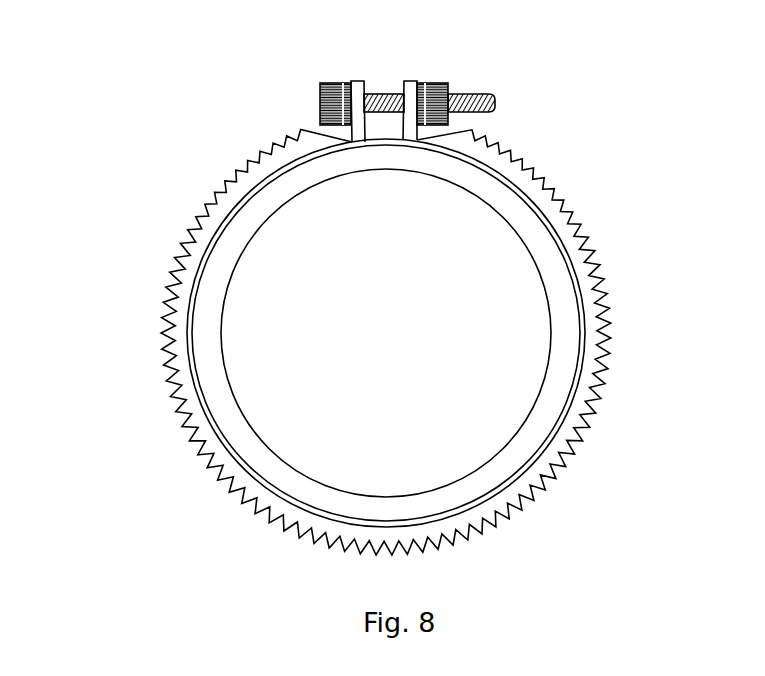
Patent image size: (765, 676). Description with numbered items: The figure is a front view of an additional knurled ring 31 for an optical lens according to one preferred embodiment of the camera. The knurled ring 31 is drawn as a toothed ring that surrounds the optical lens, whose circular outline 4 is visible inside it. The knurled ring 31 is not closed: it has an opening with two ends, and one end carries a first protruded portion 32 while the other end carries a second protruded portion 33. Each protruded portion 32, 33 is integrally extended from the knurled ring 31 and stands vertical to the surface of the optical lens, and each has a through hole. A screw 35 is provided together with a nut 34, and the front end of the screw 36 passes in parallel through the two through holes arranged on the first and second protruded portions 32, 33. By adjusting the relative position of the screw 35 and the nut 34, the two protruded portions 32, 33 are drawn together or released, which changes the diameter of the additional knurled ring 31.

The additional knurled ring 31 is at (224, 164).
The inner ring 4 is at (276, 218).
The first protruded portion 32 is at (350, 78).
The second protruded portion 33 is at (407, 77).
The nut 34 is at (457, 84).
The screw 35 is at (312, 108).
The front end of the screw 36 is at (503, 114).